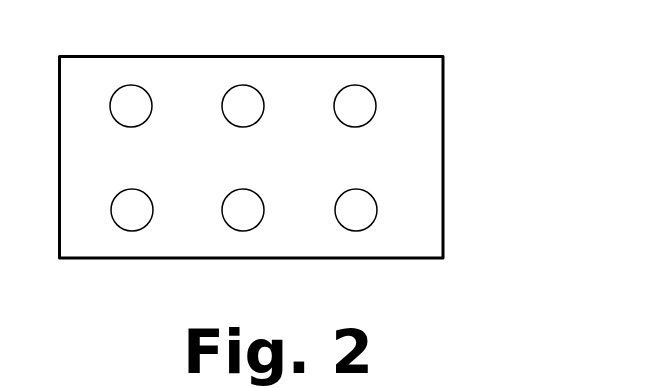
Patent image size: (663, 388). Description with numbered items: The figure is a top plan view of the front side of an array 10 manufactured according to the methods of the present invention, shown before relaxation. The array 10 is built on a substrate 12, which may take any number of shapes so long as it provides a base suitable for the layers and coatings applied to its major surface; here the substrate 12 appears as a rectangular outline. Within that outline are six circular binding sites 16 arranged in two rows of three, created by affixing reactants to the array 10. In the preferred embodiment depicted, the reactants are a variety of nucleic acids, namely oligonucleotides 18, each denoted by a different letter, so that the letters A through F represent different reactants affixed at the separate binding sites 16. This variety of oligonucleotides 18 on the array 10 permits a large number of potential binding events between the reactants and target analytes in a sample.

The array 10 is at (478, 75).
The substrate 12 is at (398, 259).
The binding sites 16 is at (144, 123).
The oligonucleotides 18 is at (137, 100).